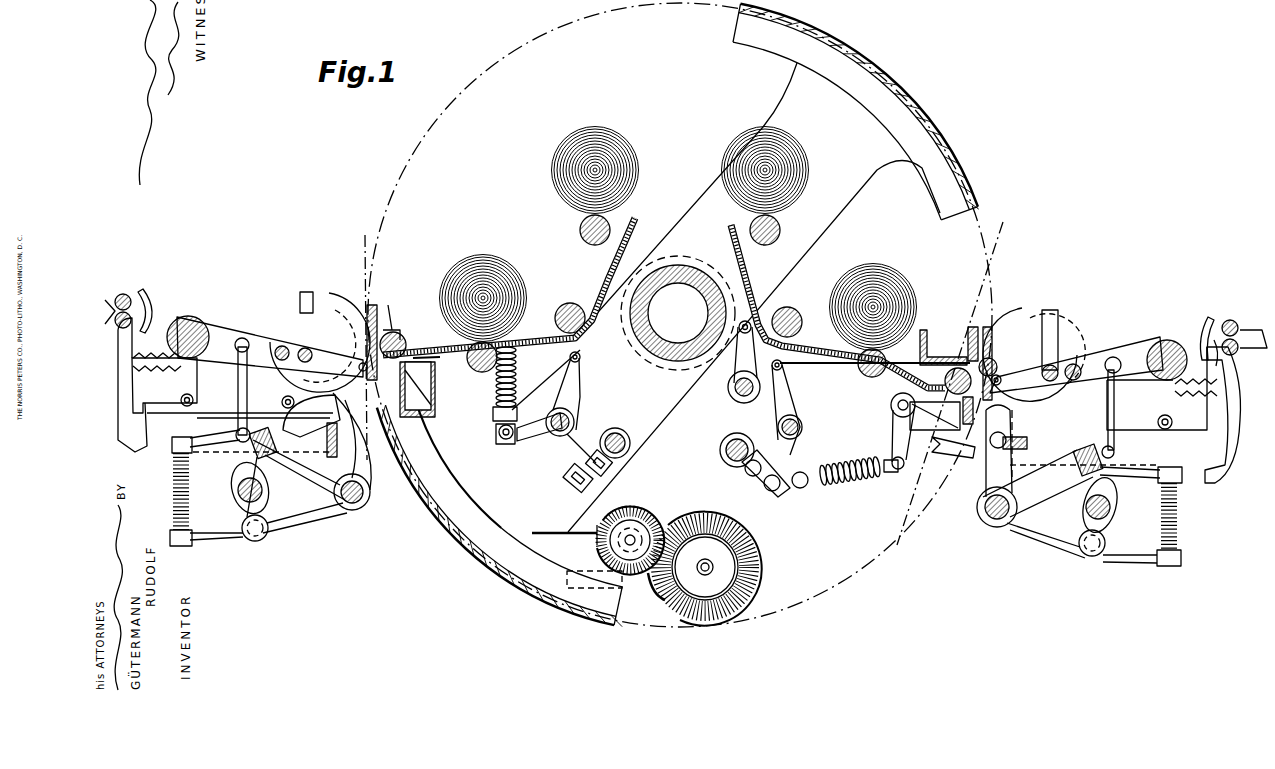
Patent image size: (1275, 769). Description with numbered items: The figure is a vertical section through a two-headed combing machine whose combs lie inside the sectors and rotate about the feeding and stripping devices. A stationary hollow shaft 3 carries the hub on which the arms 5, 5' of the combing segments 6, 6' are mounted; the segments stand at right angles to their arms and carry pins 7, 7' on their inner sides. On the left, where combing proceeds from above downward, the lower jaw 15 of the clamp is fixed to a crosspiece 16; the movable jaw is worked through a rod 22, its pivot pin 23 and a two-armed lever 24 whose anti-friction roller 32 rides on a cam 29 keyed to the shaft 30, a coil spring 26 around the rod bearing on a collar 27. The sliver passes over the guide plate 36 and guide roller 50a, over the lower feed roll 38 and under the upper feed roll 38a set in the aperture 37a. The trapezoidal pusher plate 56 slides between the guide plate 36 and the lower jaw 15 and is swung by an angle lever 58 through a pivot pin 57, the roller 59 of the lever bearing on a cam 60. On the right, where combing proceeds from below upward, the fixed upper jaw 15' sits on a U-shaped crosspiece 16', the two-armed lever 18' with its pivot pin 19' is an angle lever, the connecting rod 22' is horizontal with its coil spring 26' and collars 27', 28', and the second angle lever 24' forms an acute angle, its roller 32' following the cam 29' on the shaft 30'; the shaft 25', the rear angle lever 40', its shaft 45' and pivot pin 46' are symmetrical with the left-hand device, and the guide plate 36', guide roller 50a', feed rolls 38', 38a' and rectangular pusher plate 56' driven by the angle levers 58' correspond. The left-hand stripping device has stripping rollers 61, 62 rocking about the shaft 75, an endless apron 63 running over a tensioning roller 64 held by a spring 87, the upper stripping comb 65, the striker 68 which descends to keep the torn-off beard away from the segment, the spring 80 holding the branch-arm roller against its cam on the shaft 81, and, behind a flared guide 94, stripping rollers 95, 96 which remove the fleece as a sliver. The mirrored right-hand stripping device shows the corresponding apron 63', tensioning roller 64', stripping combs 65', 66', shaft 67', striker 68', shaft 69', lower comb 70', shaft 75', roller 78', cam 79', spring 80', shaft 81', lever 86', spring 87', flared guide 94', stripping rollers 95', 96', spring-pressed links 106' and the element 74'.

The stationary hollow shaft 3 is at (928, 36).
The arm 5 is at (690, 372).
The arm 5' is at (714, 200).
The combing segment 6 is at (499, 511).
The combing segment 6' is at (856, 112).
The pins 7 is at (468, 489).
The pins 7' is at (831, 88).
The lower jaw 15 is at (336, 441).
The fixed upper jaw 15' is at (971, 322).
The crosspiece 16 is at (433, 389).
The U-shaped crosspiece 16' is at (943, 343).
The two-armed lever 18' is at (935, 426).
The pivot pin 19' is at (888, 421).
The rod 22 is at (522, 377).
The connecting rod 22' is at (850, 485).
The pivot pin 23 is at (506, 444).
The two-armed lever 24 is at (539, 436).
The second angle lever 24' is at (807, 443).
The shaft 25' is at (813, 420).
The coil spring 26 is at (557, 411).
The coil spring 26' is at (878, 484).
The collar 27 is at (513, 395).
The collar 27' is at (805, 494).
The collar 28' is at (903, 478).
The cam 29 is at (647, 460).
The cam 29' is at (749, 473).
The shaft 30 is at (629, 435).
The shaft 30' is at (727, 445).
The anti-friction roller 32 is at (619, 467).
The anti-friction roller 32' is at (754, 485).
The guide plate 36 is at (509, 306).
The guide plate 36' is at (838, 306).
The aperture 37a is at (428, 352).
The lower feed roll 38 is at (482, 372).
The feed roll 38' is at (865, 375).
The upper feed roll 38a is at (404, 322).
The feed roll 38a' is at (929, 383).
The angle lever 40' is at (759, 413).
The shaft 45' is at (736, 396).
The pivot pin 46' is at (732, 355).
The guide roller 50a is at (565, 300).
The guide roller 50a' is at (806, 309).
The pusher plate 56 is at (483, 320).
The pusher plate 56' is at (954, 381).
The pivot pin 57 is at (582, 357).
The angle lever 58 is at (582, 410).
The angle levers 58' is at (797, 407).
The antifriction roller 59 is at (570, 488).
The cam 60 is at (585, 486).
The lower stripping roller 61 is at (307, 348).
The upper stripping roller 62 is at (331, 348).
The endless apron 63 is at (272, 340).
The endless apron 63' is at (1076, 355).
The tensioning roller 64 is at (251, 297).
The tensioning roller 64' is at (1191, 316).
The upper stripping comb 65 is at (377, 324).
The upper stripping comb 65' is at (1007, 343).
The lower stripping comb 66' is at (953, 449).
The shaft 67' is at (1116, 314).
The striker 68 is at (320, 328).
The striker 68' is at (1034, 341).
The shaft 69' is at (1089, 350).
The lower comb 70' is at (991, 451).
The pin 74' is at (1018, 354).
The shaft 75 is at (352, 504).
The shaft 75' is at (986, 509).
The antifriction roller 78' is at (1115, 454).
The cam 79' is at (1128, 485).
The spring 80 is at (163, 491).
The spring 80' is at (1187, 516).
The shaft 81 is at (237, 488).
The shaft 81' is at (1113, 505).
The lever 86' is at (1174, 415).
The spring 87 is at (225, 385).
The spring 87' is at (1197, 397).
The flared guide 94 is at (166, 307).
The flared guide 94' is at (1229, 330).
The lower stripping roller 95 is at (199, 321).
The lower stripping roller 95' is at (1204, 362).
The upper stripping roller 96 is at (131, 294).
The upper stripping roller 96' is at (1233, 348).
The spring-pressed links 106' is at (1013, 367).